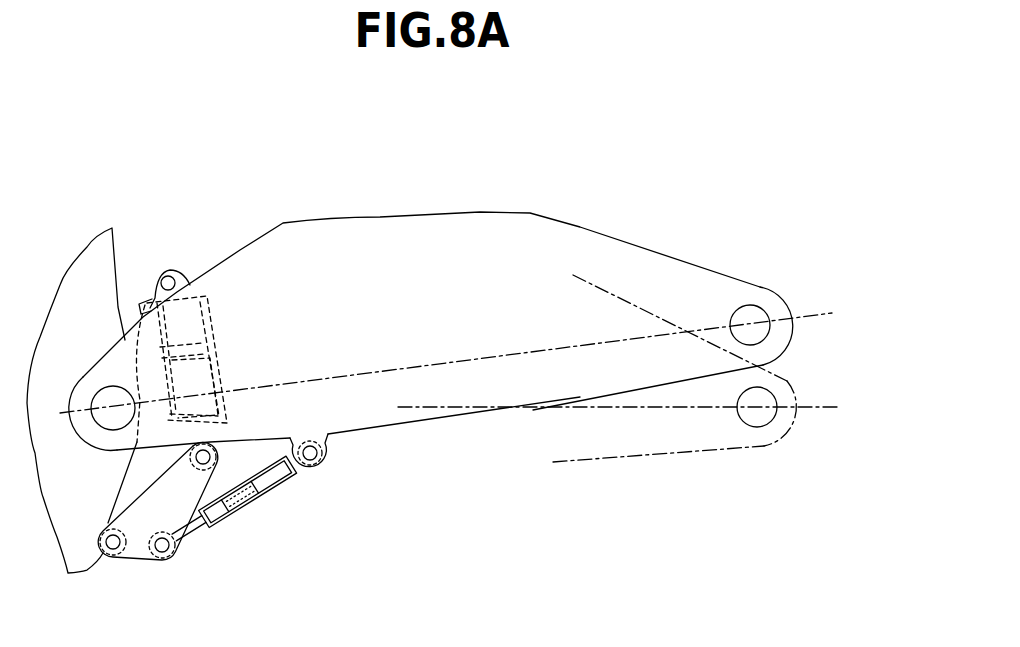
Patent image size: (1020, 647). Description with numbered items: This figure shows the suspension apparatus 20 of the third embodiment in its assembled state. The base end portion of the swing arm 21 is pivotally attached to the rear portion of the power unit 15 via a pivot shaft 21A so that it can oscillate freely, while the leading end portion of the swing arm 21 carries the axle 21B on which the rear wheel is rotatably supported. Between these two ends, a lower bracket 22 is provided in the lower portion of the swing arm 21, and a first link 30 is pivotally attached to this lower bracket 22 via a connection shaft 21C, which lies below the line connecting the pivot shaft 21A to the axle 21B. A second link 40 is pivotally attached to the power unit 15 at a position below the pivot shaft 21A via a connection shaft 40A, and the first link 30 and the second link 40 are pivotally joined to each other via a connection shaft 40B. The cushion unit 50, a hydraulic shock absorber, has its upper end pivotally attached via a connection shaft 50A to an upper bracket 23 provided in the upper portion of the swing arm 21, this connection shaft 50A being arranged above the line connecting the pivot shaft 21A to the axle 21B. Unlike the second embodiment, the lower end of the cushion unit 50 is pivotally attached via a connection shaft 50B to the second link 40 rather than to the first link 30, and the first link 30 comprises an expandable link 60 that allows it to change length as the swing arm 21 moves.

The power unit 15 is at (87, 260).
The suspension apparatus 20 is at (210, 160).
The swing arm 21 is at (485, 232).
The pivot shaft 21A is at (110, 397).
The axle 21B is at (750, 318).
The connection shaft 21C is at (327, 457).
The lower bracket 22 is at (332, 437).
The upper bracket 23 is at (190, 280).
The first link 30 is at (284, 490).
The second link 40 is at (140, 545).
The connection shaft 40A is at (108, 557).
The connection shaft 40B is at (163, 558).
The cushion unit 50 is at (200, 295).
The connection shaft 50A is at (166, 276).
The connection shaft 50B is at (183, 455).
The expandable link 60 is at (260, 505).